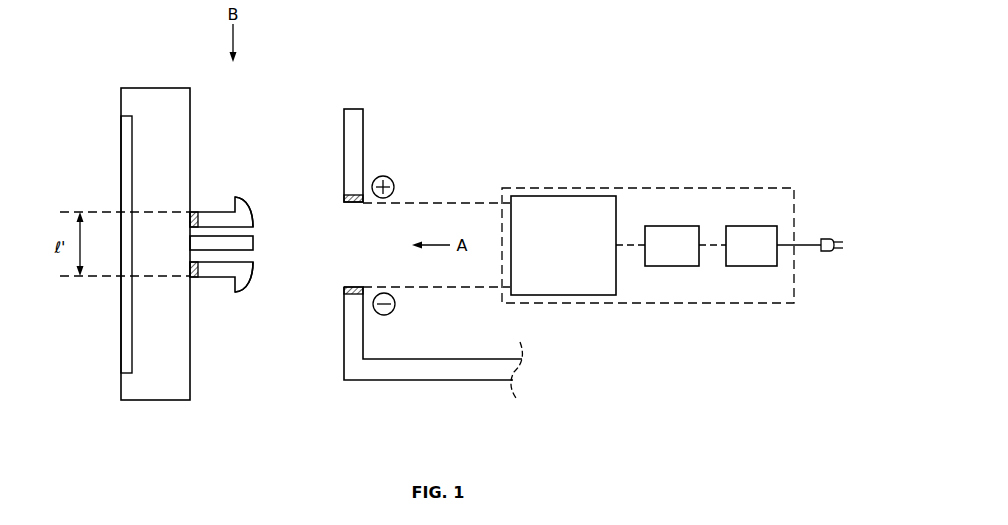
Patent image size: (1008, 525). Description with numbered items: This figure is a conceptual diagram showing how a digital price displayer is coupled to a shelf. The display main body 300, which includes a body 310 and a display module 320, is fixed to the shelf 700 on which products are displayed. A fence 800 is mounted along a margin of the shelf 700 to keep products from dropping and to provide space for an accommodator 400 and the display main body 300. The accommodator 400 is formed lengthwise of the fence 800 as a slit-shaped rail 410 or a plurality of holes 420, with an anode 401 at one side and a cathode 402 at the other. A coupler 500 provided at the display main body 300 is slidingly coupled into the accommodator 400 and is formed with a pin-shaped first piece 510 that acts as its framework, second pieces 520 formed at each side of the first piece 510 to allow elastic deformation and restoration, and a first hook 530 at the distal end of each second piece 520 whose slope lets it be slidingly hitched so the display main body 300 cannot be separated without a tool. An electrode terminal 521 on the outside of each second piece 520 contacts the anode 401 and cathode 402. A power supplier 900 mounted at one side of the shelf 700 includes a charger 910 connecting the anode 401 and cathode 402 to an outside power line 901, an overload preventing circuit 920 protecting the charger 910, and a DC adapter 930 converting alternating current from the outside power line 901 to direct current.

The display main body 300 is at (104, 125).
The body 310 is at (160, 95).
The display module 320 is at (128, 168).
The accommodator 400 is at (278, 352).
The anode 401 is at (355, 195).
The cathode 402 is at (353, 298).
The rail 410 is at (351, 271).
The holes 420 is at (401, 312).
The coupler 500 is at (316, 179).
The first piece 510 is at (253, 243).
The second piece 520 is at (213, 215).
The electrode terminal 521 is at (187, 218).
The first hook 530 is at (238, 213).
The shelf 700 is at (443, 368).
The fence 800 is at (358, 148).
The power supplier 900 is at (645, 188).
The outside power line 901 is at (808, 245).
The charger 910 is at (563, 245).
The overload preventing circuit 920 is at (672, 246).
The DC adapter 930 is at (751, 246).